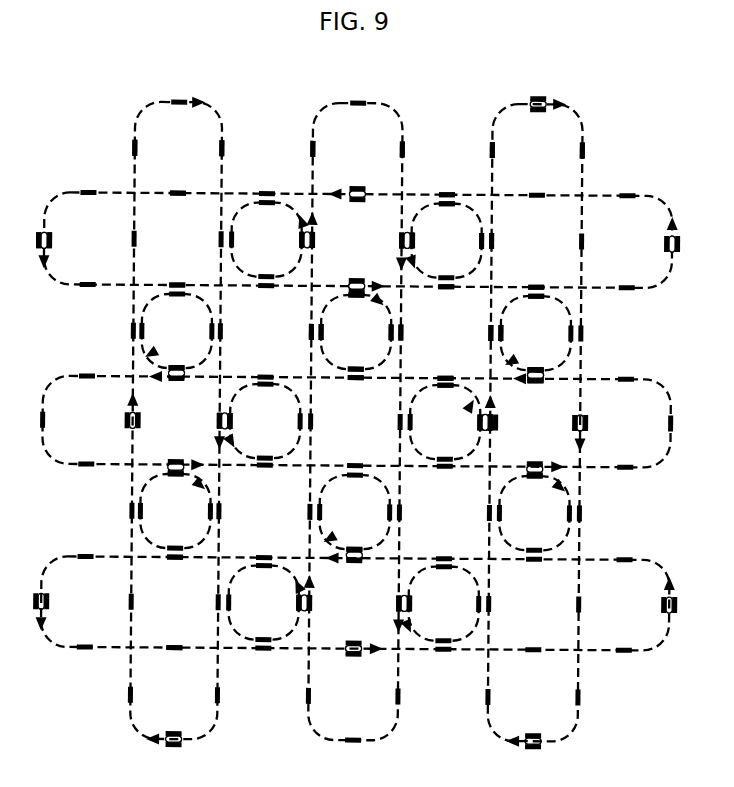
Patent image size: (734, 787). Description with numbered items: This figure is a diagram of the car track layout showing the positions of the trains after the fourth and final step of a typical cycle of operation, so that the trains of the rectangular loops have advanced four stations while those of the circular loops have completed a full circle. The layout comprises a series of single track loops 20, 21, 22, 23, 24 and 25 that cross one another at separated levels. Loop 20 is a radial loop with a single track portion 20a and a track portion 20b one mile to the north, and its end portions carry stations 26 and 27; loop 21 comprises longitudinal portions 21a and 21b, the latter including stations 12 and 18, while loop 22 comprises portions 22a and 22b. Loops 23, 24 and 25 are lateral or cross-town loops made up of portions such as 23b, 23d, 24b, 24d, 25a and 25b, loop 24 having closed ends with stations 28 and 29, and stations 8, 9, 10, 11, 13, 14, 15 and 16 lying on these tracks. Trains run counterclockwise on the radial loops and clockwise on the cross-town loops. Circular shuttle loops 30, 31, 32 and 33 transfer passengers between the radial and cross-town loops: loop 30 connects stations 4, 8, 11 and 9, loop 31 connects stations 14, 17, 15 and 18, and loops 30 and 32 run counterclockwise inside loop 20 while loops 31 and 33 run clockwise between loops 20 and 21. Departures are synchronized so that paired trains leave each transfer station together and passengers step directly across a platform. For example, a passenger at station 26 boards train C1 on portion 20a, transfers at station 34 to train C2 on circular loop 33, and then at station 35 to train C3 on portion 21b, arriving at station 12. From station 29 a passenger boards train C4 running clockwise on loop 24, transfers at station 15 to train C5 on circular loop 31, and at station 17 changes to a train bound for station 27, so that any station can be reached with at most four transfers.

The station 4 is at (451, 287).
The station 8 is at (498, 232).
The station 9 is at (406, 231).
The station 10 is at (318, 229).
The station 11 is at (454, 197).
The station 12 is at (440, 379).
The station 13 is at (496, 325).
The station 14 is at (405, 321).
The station 15 is at (314, 321).
The station 16 is at (364, 188).
The station 17 is at (361, 282).
The station 18 is at (361, 375).
The single track loop 20 is at (57, 193).
The single track portion 20a is at (148, 289).
The single track portion 20b is at (211, 194).
The single track loop 21 is at (44, 394).
The longitudinal portion 21a is at (151, 465).
The longitudinal portion 21b is at (216, 377).
The single track loop 22 is at (41, 583).
The track portion 22a is at (149, 648).
The track portion 22b is at (213, 558).
The single track loop 23 is at (224, 110).
The lateral portion 23b is at (136, 183).
The waveguide section 23d is at (223, 183).
The single track loop 24 is at (401, 107).
The lateral portion 24b is at (314, 182).
The waveguide section 24d is at (404, 183).
The single track loop 25 is at (581, 107).
The lateral portion 25a is at (584, 182).
The lateral portion 25b is at (494, 183).
The station 26 is at (39, 240).
The station 27 is at (680, 242).
The station 28 is at (362, 98).
The station 29 is at (354, 743).
The circular loop 30 is at (479, 275).
The circular loop 31 is at (383, 363).
The circular loop 32 is at (246, 208).
The circular loop 33 is at (509, 303).
The station 34 is at (548, 288).
The station 35 is at (549, 377).
The train C1 is at (53, 240).
The train C2 is at (543, 368).
The train C3 is at (543, 380).
The train C4 is at (399, 608).
The train C5 is at (359, 290).